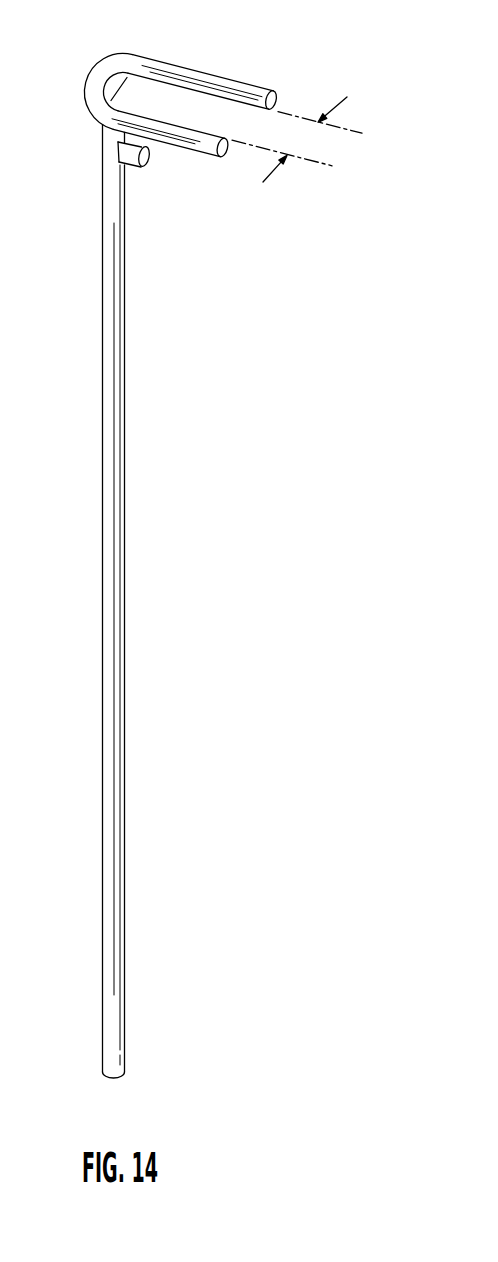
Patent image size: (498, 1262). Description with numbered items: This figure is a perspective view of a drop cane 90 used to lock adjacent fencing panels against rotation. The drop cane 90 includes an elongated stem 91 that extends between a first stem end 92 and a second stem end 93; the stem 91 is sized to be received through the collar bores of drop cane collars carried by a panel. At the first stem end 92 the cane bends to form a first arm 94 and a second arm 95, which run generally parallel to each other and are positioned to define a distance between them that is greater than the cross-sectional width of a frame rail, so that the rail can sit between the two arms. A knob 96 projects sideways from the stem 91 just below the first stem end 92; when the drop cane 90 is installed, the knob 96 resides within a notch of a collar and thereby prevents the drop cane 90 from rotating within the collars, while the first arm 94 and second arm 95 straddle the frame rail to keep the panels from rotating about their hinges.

The drop cane 90 is at (312, 48).
The stem 91 is at (120, 641).
The first stem end 92 is at (118, 84).
The second stem end 93 is at (110, 1077).
The first arm 94 is at (197, 140).
The second arm 95 is at (226, 82).
The knob 96 is at (118, 150).